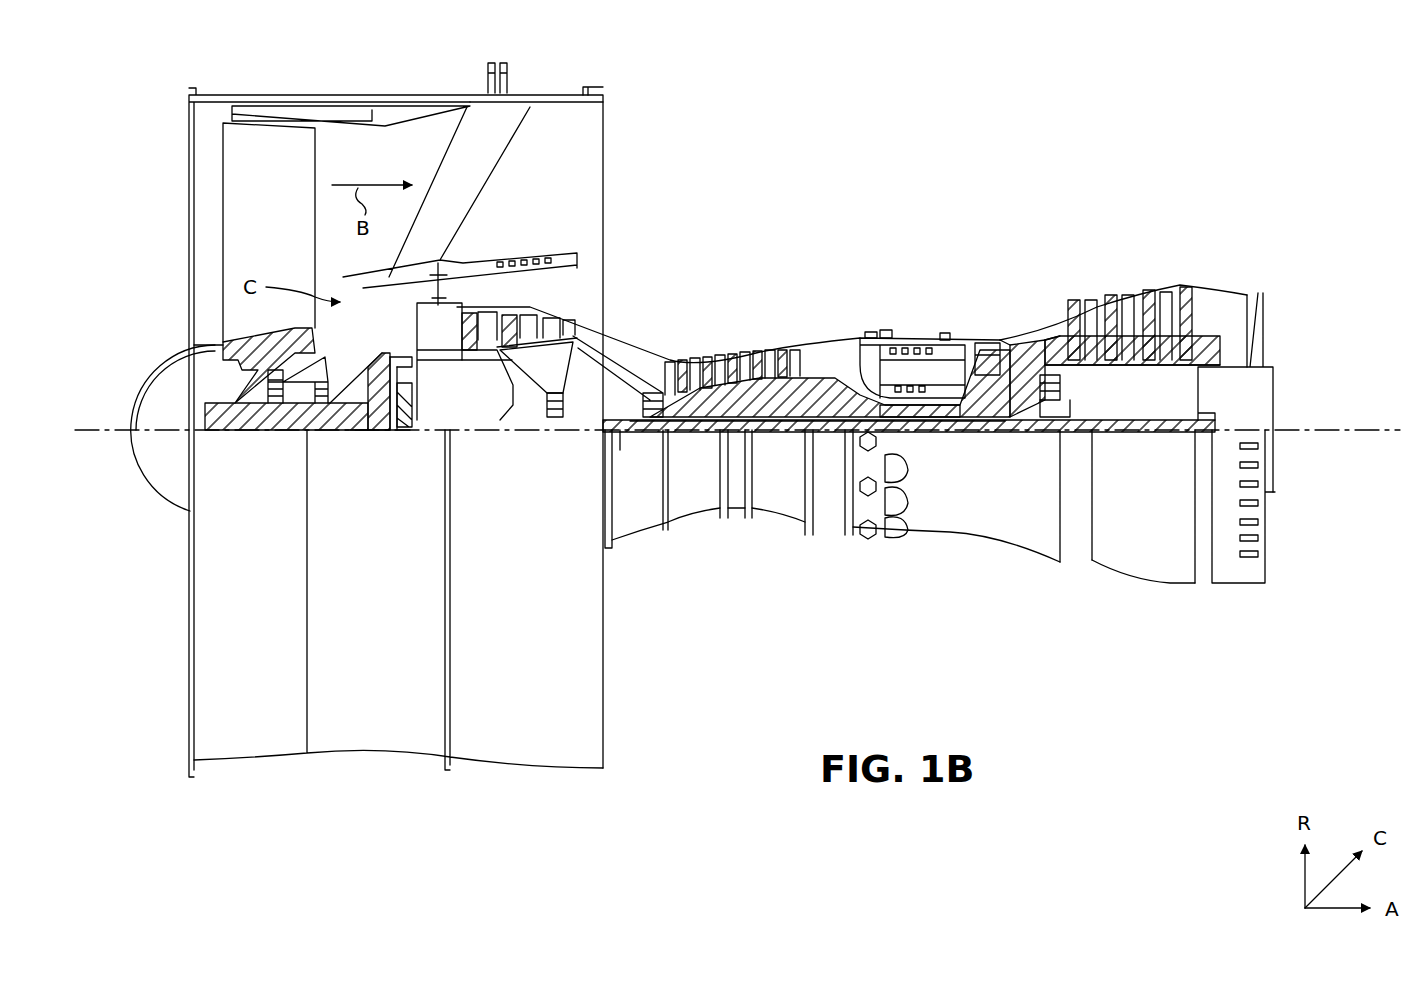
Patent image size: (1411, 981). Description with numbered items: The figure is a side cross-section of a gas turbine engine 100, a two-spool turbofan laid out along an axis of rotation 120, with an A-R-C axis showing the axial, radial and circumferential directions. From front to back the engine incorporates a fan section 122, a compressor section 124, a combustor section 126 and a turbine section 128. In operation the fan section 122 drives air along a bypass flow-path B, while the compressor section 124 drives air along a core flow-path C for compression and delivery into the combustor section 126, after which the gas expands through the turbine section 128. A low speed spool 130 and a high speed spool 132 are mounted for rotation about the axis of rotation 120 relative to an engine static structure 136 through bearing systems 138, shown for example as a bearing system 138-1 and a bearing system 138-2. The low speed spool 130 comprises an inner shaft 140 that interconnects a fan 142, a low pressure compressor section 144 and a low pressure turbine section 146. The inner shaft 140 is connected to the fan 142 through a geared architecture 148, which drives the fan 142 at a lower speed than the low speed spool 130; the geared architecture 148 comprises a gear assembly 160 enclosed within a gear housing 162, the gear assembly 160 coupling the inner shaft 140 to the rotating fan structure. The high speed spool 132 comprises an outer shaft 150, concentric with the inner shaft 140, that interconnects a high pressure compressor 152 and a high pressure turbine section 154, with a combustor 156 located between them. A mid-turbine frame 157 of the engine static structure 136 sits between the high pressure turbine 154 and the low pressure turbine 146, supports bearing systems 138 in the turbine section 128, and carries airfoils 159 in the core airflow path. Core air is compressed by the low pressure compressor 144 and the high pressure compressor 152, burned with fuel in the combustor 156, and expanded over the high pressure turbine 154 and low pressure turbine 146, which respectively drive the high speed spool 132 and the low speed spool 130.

The gas turbine engine 100 is at (745, 108).
The axis of rotation 120 is at (97, 430).
The fan section 122 is at (443, 74).
The compressor section 124 is at (855, 215).
The combustor section 126 is at (968, 215).
The turbine section 128 is at (1200, 215).
The low speed spool 130 is at (787, 445).
The high speed spool 132 is at (823, 395).
The engine static structure 136 is at (832, 520).
The bearing system 138 is at (1038, 430).
The bearing system 138-1 is at (283, 400).
The bearing system 138-2 is at (553, 418).
The inner shaft 140 is at (627, 440).
The fan 142 is at (269, 232).
The low pressure compressor section 144 is at (530, 322).
The low pressure turbine section 146 is at (1125, 312).
The geared architecture 148 is at (405, 450).
The outer shaft 150 is at (905, 413).
The high pressure compressor 152 is at (758, 362).
The high pressure turbine section 154 is at (985, 350).
The combustor 156 is at (910, 362).
The mid-turbine frame 157 is at (1030, 347).
The airfoils 159 is at (1032, 355).
The gear assembly 160 is at (397, 420).
The gear housing 162 is at (412, 370).